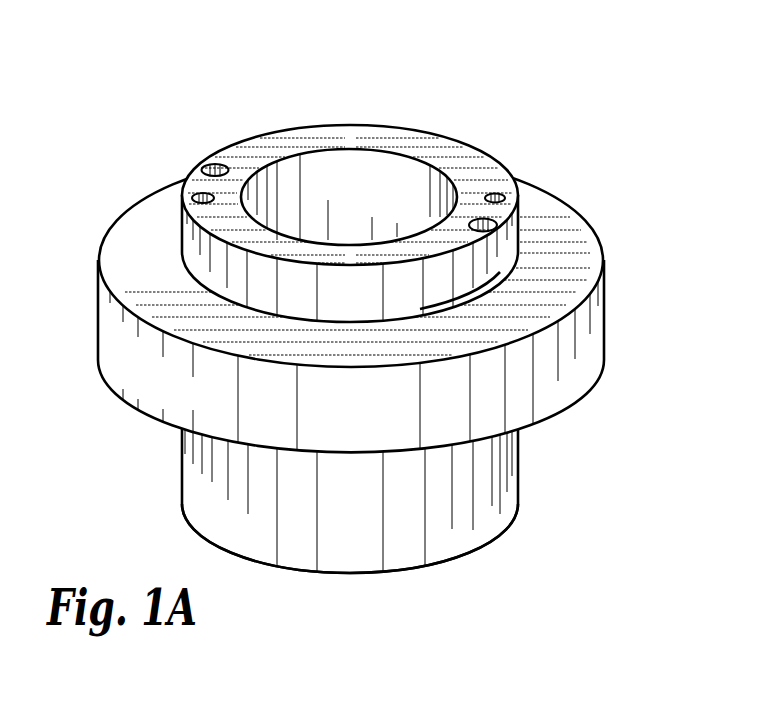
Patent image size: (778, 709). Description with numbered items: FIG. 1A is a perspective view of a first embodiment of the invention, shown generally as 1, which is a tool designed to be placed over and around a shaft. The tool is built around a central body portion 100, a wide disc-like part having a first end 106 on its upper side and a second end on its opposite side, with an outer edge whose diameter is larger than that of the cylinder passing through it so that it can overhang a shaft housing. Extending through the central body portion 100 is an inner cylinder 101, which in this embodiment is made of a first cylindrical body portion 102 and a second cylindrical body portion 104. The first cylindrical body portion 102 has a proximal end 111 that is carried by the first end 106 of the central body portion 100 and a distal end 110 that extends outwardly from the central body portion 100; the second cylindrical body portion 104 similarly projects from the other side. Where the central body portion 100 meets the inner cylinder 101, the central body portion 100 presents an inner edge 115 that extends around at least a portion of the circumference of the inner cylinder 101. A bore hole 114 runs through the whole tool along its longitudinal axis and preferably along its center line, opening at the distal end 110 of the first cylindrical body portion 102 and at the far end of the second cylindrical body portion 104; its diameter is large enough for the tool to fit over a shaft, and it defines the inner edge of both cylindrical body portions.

The first embodiment of the invention 1 is at (373, 344).
The central body portion 100 is at (397, 284).
The inner cylinder 101 is at (353, 122).
The first cylindrical body portion 102 is at (522, 220).
The second cylindrical body portion 104 is at (518, 470).
The first end 106 is at (584, 262).
The distal end 110 is at (373, 355).
The proximal end 111 is at (178, 255).
The bore hole 114 is at (323, 178).
The inner edge 115 is at (452, 312).